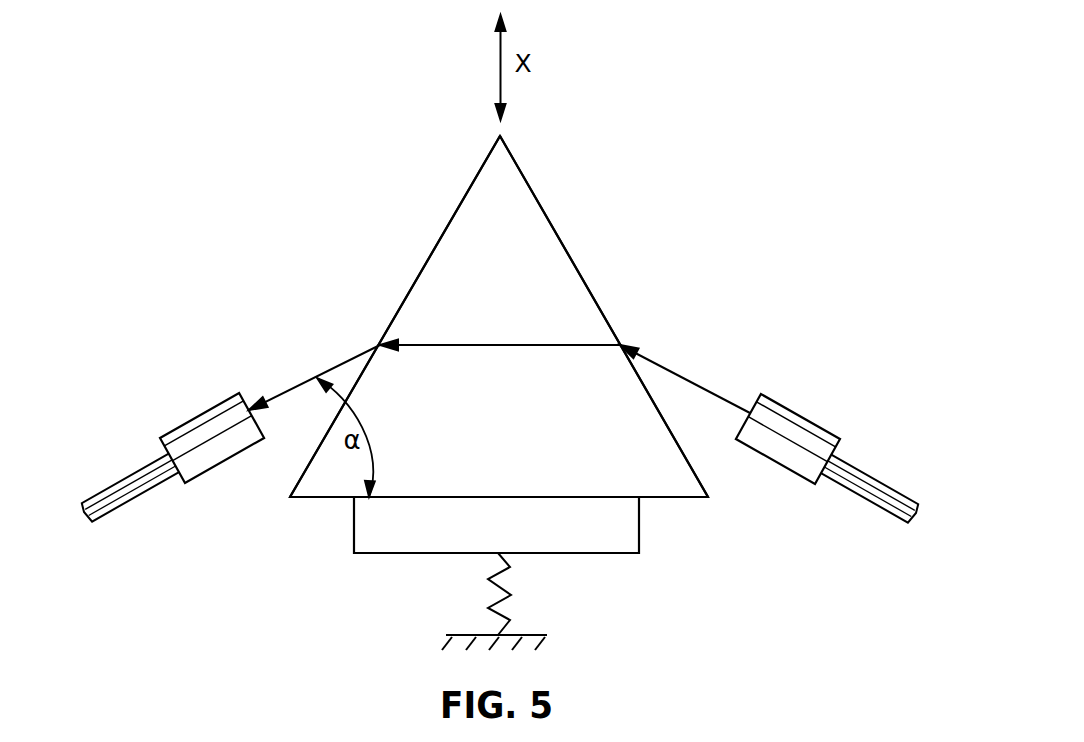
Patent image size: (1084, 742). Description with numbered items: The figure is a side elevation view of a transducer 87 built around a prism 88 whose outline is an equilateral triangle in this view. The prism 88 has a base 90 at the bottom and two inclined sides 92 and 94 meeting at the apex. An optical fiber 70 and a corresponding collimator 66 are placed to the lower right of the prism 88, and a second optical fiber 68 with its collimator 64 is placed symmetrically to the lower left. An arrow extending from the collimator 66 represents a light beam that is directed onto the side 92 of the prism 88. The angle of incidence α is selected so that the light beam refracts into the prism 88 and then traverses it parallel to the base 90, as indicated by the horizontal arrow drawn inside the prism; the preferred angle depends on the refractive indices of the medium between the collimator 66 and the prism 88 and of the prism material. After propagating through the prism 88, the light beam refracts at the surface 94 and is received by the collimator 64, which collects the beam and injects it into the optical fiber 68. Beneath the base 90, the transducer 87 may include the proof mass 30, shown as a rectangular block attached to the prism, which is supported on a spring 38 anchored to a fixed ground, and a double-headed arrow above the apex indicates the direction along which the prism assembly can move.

The proof mass 30 is at (353, 528).
The spring 38 is at (504, 600).
The collimator 64 is at (195, 422).
The collimator 66 is at (805, 420).
The optical fiber 68 is at (127, 473).
The optical fiber 70 is at (873, 473).
The transducer 87 is at (645, 213).
The prism 88 is at (400, 236).
The base 90 is at (678, 502).
The side 92 is at (582, 278).
The side 94 is at (405, 299).